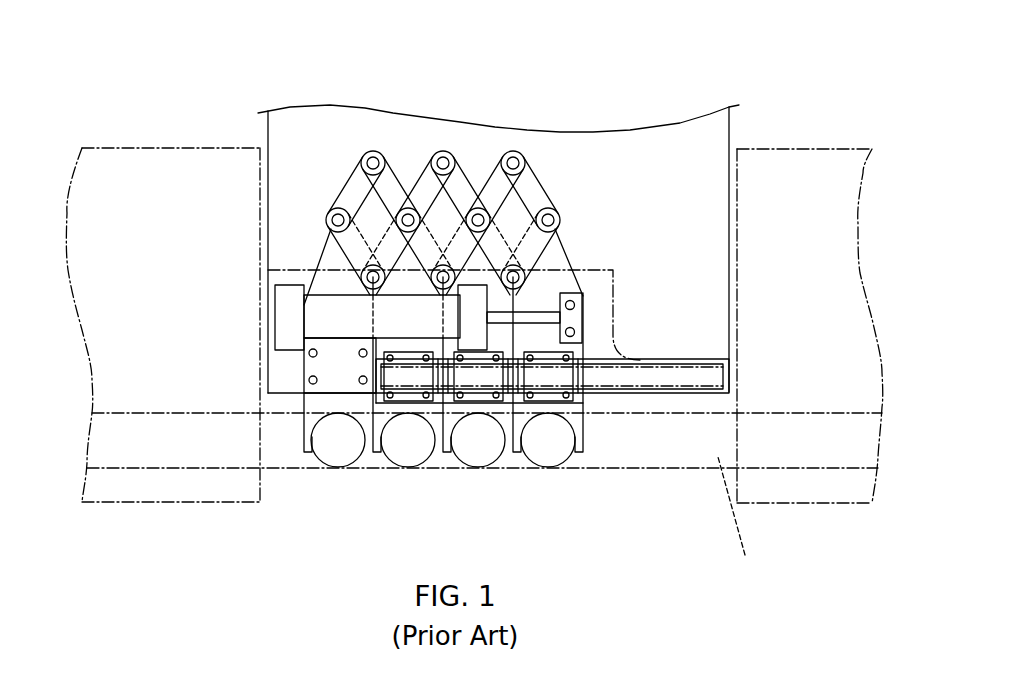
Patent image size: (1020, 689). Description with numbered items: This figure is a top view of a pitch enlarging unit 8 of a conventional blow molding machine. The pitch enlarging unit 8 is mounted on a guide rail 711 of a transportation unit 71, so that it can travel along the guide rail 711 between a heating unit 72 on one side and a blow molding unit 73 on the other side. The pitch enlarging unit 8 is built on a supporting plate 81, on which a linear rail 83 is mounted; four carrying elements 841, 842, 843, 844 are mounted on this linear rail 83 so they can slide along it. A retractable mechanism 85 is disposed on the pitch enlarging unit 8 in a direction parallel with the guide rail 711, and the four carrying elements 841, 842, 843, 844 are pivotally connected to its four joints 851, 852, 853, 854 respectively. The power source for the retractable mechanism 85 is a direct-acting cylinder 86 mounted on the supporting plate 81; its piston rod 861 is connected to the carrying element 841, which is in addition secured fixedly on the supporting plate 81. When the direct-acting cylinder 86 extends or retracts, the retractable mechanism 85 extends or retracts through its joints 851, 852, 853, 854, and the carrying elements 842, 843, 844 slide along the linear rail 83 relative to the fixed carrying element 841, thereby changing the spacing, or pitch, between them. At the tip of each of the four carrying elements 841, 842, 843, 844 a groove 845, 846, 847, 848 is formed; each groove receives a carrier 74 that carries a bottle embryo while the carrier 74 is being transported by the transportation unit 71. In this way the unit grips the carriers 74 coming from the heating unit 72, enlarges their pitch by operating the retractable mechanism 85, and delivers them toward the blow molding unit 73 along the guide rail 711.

The pitch enlarging unit 8 is at (611, 108).
The retractable mechanism 85 is at (368, 145).
The joint 851 is at (552, 216).
The joint 852 is at (486, 212).
The joint 853 is at (406, 212).
The joint 854 is at (342, 216).
The direct-acting cylinder 86 is at (322, 310).
The piston rod 861 is at (553, 312).
The supporting plate 81 is at (640, 361).
The linear rail 83 is at (673, 367).
The carrying element 841 is at (578, 418).
The carrying element 842 is at (512, 454).
The carrying element 843 is at (382, 415).
The carrying element 844 is at (307, 417).
The groove 845 is at (573, 420).
The groove 846 is at (481, 414).
The groove 847 is at (393, 412).
The groove 848 is at (314, 427).
The carrier 74 is at (338, 467).
The transportation unit 71 is at (683, 478).
The guide rail 711 is at (744, 516).
The heating unit 72 is at (165, 487).
The blow molding unit 73 is at (820, 495).